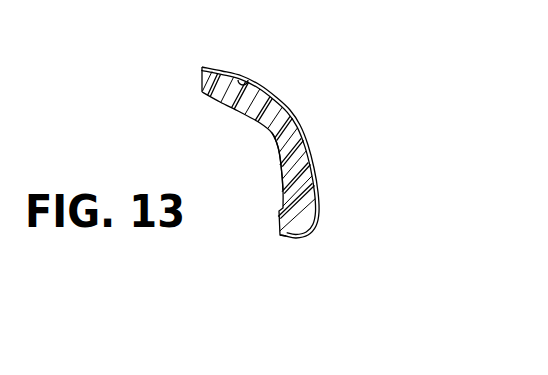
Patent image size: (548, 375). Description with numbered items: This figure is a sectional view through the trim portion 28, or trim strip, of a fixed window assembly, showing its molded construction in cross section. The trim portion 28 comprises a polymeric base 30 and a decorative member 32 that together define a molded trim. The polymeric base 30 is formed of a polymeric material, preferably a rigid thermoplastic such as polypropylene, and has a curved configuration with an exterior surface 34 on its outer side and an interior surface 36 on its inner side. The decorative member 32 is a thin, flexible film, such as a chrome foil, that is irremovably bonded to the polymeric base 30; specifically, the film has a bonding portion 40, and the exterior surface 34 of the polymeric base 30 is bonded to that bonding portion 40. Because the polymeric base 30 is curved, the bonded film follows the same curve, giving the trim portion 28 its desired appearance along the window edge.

The trim portion 28 is at (294, 146).
The polymeric base 30 is at (277, 134).
The decorative member 32 is at (304, 173).
The exterior surface 34 is at (203, 66).
The interior surface 36 is at (281, 162).
The bonding portion 40 is at (255, 86).